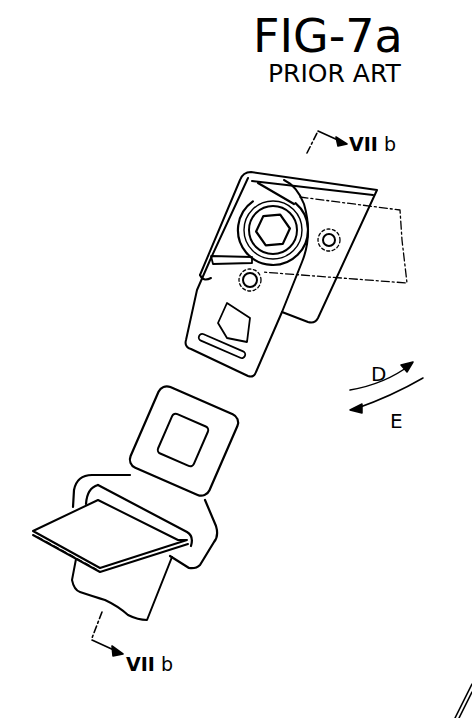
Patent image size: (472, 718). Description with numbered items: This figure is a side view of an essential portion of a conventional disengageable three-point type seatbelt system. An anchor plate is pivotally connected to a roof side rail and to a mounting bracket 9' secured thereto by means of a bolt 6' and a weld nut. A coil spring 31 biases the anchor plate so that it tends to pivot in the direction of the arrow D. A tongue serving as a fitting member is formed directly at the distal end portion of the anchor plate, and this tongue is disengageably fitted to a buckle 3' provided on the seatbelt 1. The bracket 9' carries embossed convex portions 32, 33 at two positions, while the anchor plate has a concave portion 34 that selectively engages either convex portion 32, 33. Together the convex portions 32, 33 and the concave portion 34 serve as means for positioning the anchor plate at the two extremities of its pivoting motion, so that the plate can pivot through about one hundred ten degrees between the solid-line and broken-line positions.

The seatbelt 1 is at (153, 587).
The buckle 3' is at (171, 476).
The bolt 6' is at (249, 218).
The mounting bracket 9' is at (288, 249).
The coil spring 31 is at (264, 181).
The embossed convex portion 32 is at (257, 292).
The embossed convex portion 33 is at (338, 233).
The concave portion 34 is at (238, 280).